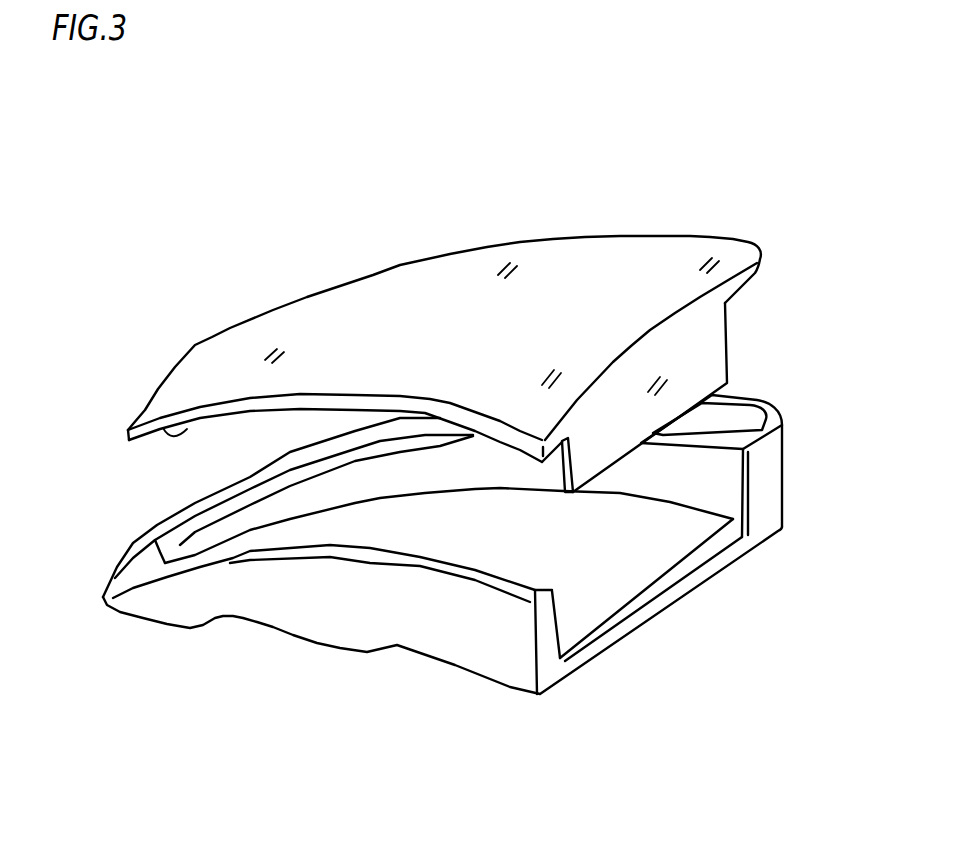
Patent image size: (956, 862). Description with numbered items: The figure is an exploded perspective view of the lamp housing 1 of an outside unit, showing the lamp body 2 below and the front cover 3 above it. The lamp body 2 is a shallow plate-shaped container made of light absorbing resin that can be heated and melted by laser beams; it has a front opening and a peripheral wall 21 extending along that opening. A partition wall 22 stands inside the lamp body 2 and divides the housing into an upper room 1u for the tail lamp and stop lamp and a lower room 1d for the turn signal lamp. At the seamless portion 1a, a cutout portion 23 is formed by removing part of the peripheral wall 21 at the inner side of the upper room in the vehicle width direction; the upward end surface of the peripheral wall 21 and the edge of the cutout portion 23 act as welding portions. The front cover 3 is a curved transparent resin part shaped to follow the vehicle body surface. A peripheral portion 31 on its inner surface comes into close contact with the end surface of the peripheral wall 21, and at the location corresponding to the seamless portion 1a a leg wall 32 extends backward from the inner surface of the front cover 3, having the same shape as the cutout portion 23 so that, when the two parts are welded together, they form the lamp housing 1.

The lamp housing 1 is at (701, 220).
The seamless portion 1a is at (703, 598).
The upper room 1u is at (572, 617).
The lower room 1d is at (180, 518).
The lamp body 2 is at (466, 670).
The peripheral wall 21 is at (308, 607).
The partition wall 22 is at (775, 475).
The cutout portion 23 is at (710, 552).
The front cover 3 is at (453, 254).
The peripheral portion 31 is at (163, 430).
The leg wall 32 is at (708, 358).